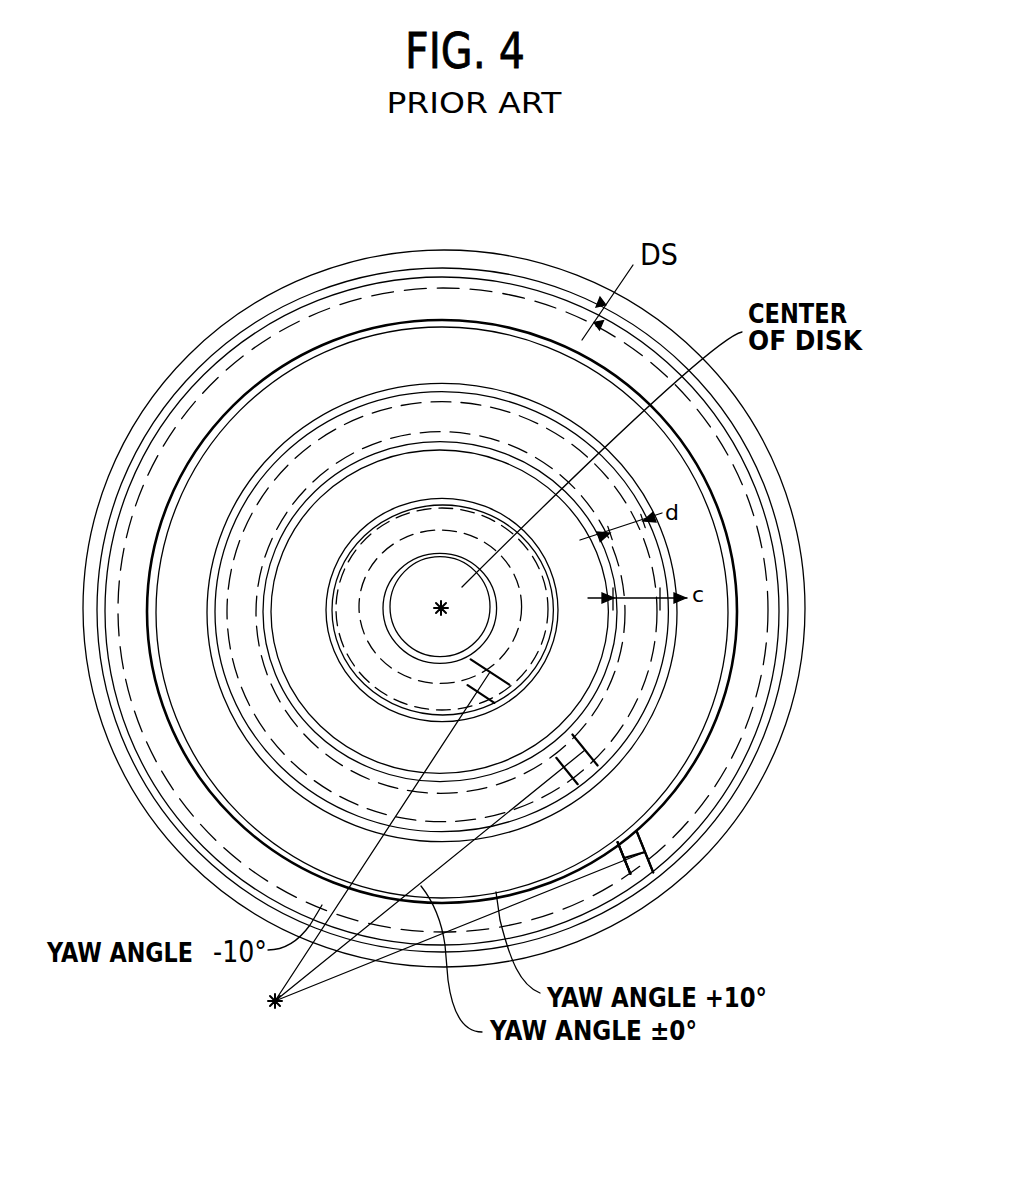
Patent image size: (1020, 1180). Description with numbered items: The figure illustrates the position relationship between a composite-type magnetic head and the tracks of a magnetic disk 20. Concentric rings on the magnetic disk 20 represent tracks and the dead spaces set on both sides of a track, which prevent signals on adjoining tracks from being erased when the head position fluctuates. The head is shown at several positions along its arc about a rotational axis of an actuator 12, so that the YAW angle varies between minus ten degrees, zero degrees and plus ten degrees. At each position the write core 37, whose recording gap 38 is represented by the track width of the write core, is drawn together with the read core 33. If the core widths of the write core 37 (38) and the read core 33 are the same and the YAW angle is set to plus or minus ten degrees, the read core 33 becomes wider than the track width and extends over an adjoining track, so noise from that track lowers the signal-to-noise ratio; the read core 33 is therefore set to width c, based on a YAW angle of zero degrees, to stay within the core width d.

The magnetic disk 20 is at (267, 298).
The rotational axis of actuator 12 is at (395, 870).
The read core 33 is at (623, 873).
The write core 37 is at (658, 853).
The recording gap 38 is at (636, 853).